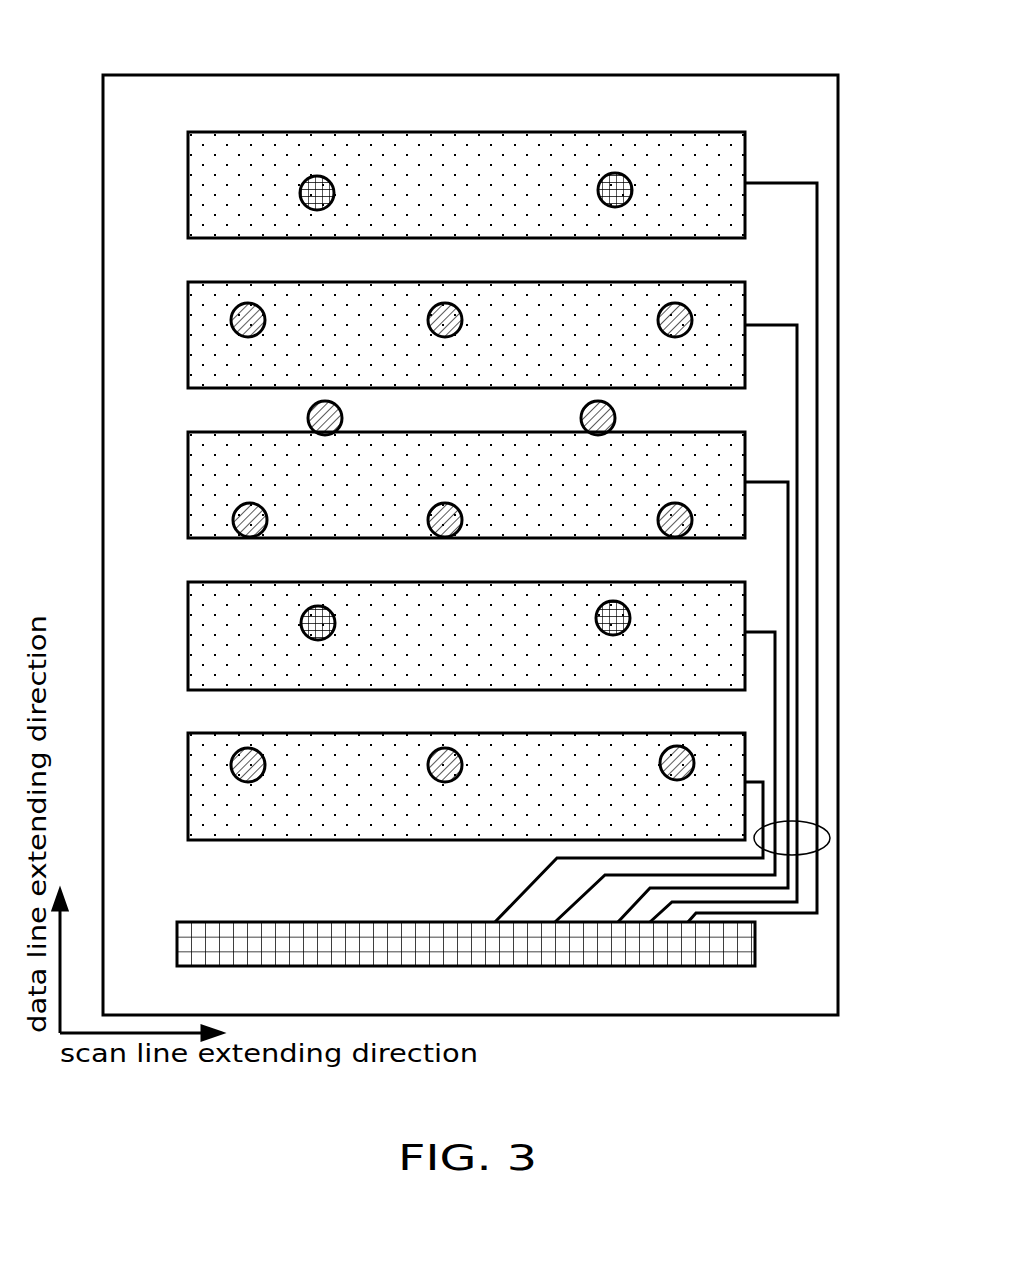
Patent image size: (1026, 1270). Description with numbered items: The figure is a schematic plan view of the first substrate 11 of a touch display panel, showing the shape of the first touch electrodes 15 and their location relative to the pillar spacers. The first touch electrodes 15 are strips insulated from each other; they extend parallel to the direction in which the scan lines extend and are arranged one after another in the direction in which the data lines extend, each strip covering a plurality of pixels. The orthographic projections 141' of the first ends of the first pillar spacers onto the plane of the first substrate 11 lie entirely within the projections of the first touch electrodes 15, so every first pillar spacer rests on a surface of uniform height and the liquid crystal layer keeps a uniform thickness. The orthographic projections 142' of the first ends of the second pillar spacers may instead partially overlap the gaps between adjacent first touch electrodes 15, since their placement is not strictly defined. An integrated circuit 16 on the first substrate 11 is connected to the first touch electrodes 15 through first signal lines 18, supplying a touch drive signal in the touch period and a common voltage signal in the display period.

The first substrate 11 is at (797, 75).
The orthographic projections of the first ends of the first pillar spacers 141' is at (336, 388).
The orthographic projections of the first ends of the second pillar spacers 142' is at (570, 542).
The first touch electrodes 15 is at (187, 763).
The integrated circuit 16 is at (718, 960).
The first signal lines 18 is at (823, 823).